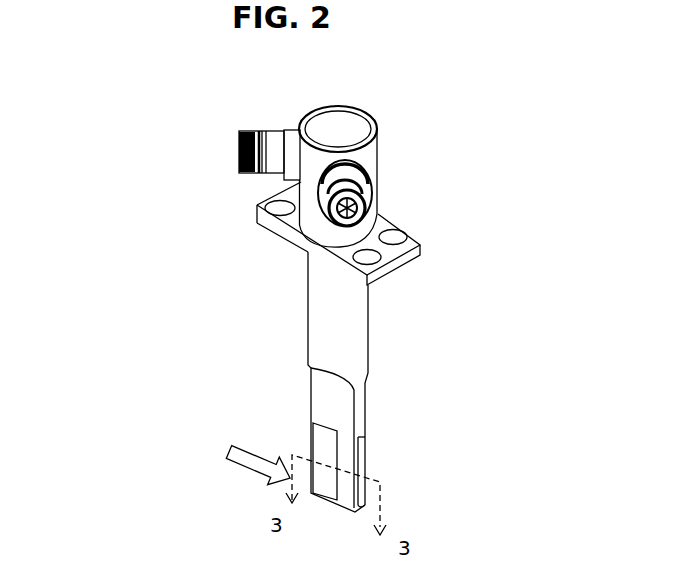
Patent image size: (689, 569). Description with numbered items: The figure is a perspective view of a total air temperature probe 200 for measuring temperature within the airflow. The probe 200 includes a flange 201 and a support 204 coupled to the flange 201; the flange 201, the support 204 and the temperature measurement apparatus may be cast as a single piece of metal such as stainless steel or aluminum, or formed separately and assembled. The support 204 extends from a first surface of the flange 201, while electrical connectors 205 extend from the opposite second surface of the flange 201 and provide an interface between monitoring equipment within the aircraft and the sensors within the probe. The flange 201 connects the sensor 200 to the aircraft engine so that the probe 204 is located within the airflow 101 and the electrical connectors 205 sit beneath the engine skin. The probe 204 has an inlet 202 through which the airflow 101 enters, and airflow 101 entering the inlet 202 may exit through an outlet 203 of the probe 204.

The probe 200 is at (135, 125).
The flange 201 is at (265, 226).
The inlet 202 is at (317, 448).
The outlet 203 is at (368, 470).
The support 204 is at (369, 322).
The electrical connectors 205 is at (405, 172).
The airflow 101 is at (225, 455).